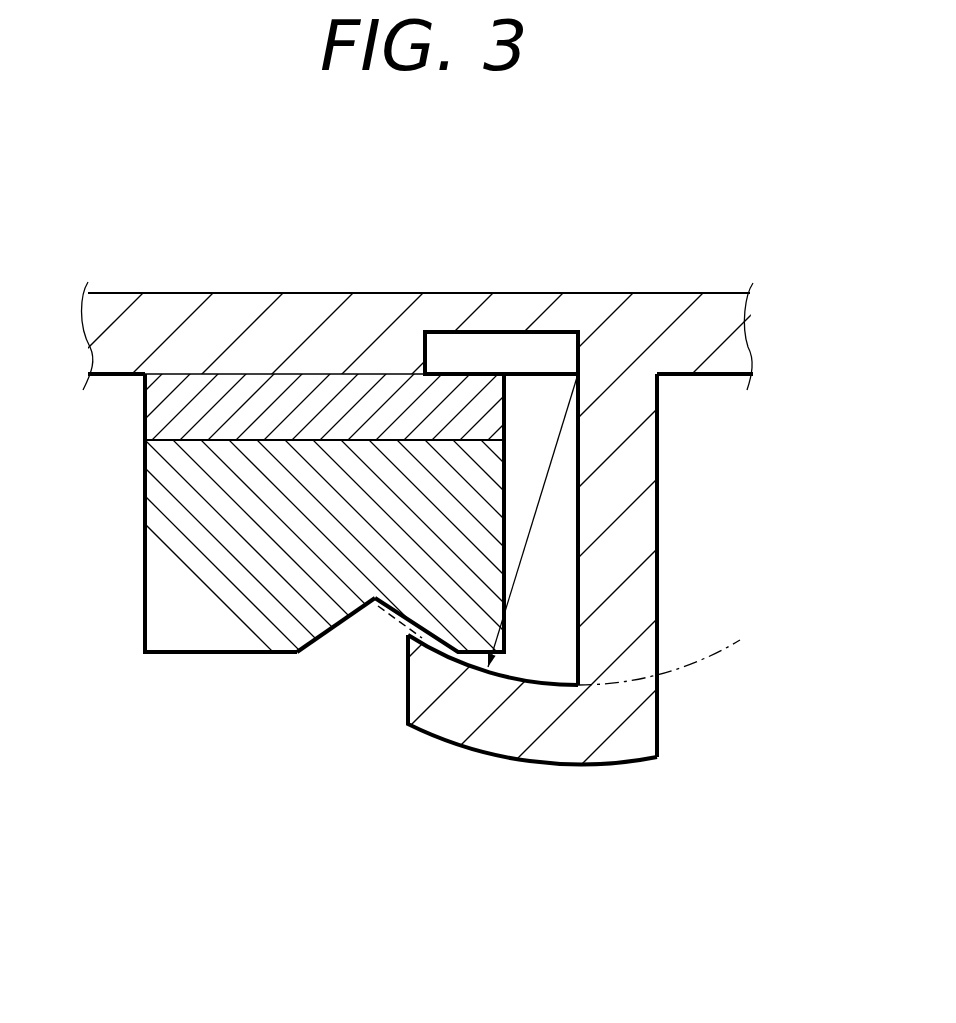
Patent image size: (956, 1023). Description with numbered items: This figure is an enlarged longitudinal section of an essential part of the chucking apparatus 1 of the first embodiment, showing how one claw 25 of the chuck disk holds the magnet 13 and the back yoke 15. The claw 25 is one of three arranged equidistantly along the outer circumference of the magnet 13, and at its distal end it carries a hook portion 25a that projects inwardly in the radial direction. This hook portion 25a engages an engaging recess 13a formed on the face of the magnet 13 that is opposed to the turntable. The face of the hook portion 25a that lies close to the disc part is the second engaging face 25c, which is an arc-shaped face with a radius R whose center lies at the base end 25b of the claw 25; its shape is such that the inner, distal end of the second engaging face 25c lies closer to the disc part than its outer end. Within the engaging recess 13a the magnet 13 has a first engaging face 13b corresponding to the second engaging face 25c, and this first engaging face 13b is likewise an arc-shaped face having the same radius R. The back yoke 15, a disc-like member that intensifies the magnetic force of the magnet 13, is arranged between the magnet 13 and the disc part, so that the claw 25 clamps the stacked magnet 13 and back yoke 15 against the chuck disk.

The display panel 1 is at (782, 278).
The magnet 13 is at (325, 480).
The engaging recess 13a is at (334, 638).
The first engaging face 13b is at (400, 622).
The back yoke 15 is at (168, 402).
The claw 25 is at (581, 533).
The hook portion 25a is at (500, 733).
The base end 25b is at (584, 369).
The second engaging face 25c is at (541, 681).
The radius R is at (561, 430).